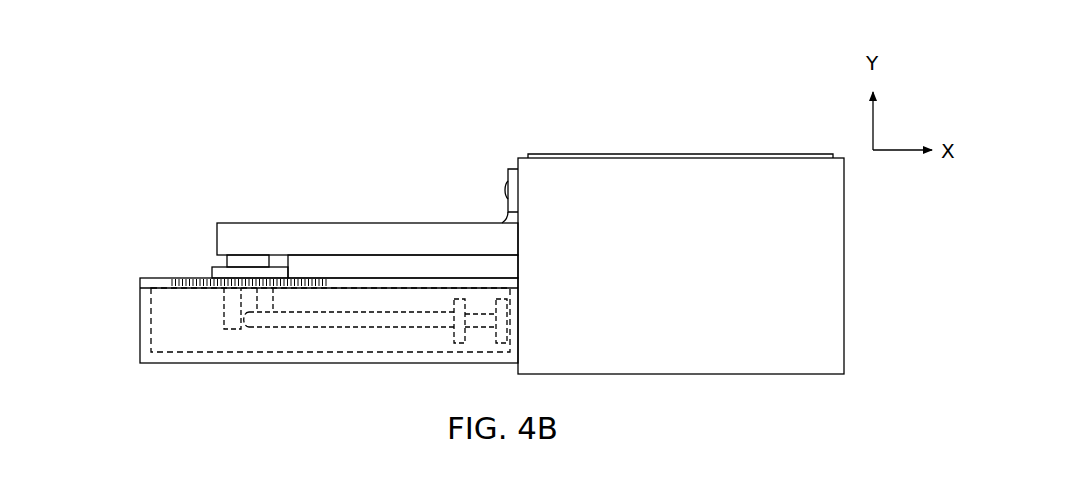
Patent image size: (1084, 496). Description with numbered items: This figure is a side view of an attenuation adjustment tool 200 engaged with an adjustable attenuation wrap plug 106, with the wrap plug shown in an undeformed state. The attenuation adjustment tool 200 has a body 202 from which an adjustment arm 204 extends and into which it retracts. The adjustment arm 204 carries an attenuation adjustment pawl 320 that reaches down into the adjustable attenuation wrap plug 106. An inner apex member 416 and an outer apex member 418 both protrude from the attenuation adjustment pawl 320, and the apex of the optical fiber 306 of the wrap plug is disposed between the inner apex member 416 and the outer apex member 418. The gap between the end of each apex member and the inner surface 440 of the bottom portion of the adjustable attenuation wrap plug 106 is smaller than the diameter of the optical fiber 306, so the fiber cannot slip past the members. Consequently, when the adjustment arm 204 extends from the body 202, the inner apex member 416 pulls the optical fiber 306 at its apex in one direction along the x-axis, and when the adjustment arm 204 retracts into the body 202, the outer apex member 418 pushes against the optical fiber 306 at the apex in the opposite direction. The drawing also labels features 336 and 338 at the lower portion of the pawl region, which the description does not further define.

The adjustable attenuation wrap plug 106 is at (128, 246).
The attenuation adjustment tool 200 is at (681, 223).
The body 202 is at (713, 275).
The adjustment arm 204 is at (376, 222).
The optical fiber 306 is at (362, 323).
The attenuation adjustment pawl 320 is at (245, 262).
The coupling member 336 is at (262, 331).
The coupling member 338 is at (233, 331).
The inner apex member 416 is at (268, 298).
The outer apex member 418 is at (226, 302).
The inner surface 440 is at (168, 352).